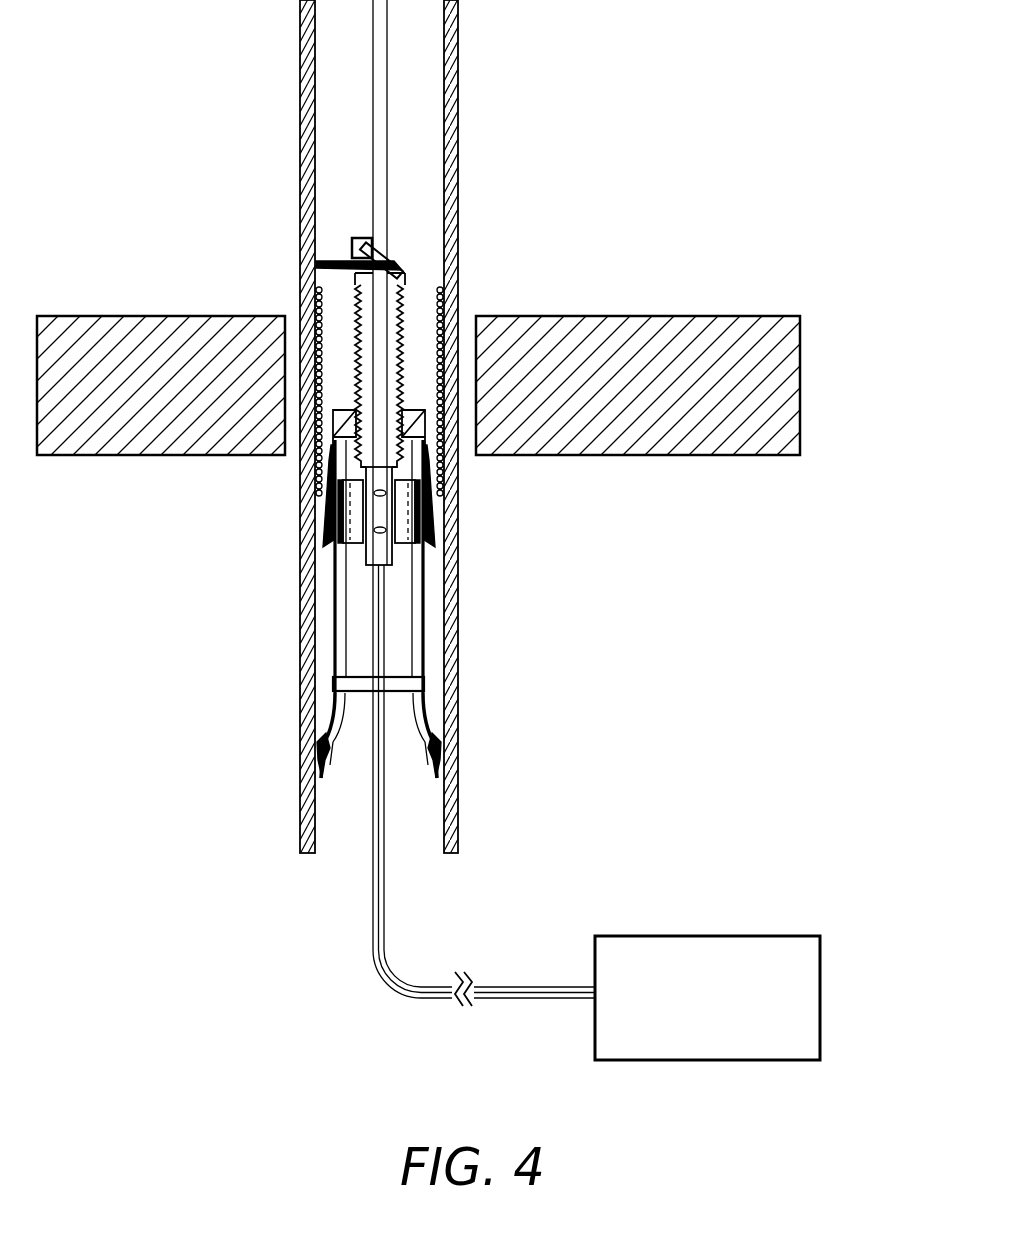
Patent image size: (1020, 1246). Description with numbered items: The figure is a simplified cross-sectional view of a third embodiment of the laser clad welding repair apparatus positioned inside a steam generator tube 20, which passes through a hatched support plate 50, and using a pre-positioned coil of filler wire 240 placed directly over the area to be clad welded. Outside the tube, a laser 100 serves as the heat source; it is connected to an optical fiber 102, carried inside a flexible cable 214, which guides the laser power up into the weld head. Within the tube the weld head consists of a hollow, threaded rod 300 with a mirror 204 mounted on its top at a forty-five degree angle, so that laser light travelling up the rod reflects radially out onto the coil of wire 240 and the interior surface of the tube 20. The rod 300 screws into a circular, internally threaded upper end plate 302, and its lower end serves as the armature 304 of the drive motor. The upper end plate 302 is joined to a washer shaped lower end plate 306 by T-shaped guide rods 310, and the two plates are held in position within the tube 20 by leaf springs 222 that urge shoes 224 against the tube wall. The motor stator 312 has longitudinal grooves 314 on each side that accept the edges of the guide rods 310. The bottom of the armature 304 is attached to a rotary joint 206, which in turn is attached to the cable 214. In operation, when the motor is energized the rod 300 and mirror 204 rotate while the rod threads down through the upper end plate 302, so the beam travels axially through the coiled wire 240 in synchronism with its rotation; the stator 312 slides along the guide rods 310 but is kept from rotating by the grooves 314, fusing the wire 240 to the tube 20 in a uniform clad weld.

The tube 20 is at (308, 857).
The tube support plate 50 is at (800, 377).
The laser 100 is at (703, 935).
The optical fiber 102 is at (373, 948).
The mirror 204 is at (390, 260).
The rotary joint 206 is at (389, 560).
The flexible cable 214 is at (422, 1002).
The leaf springs 222 is at (430, 723).
The shoes 224 is at (437, 752).
The coil of filler wire 240 is at (312, 263).
The threaded rod 300 is at (405, 300).
The upper end plate 302 is at (333, 418).
The armature 304 is at (393, 546).
The lower end plate 306 is at (333, 684).
The guide rods 310 is at (334, 609).
The stator 312 is at (336, 515).
The longitudinal grooves 314 is at (344, 547).